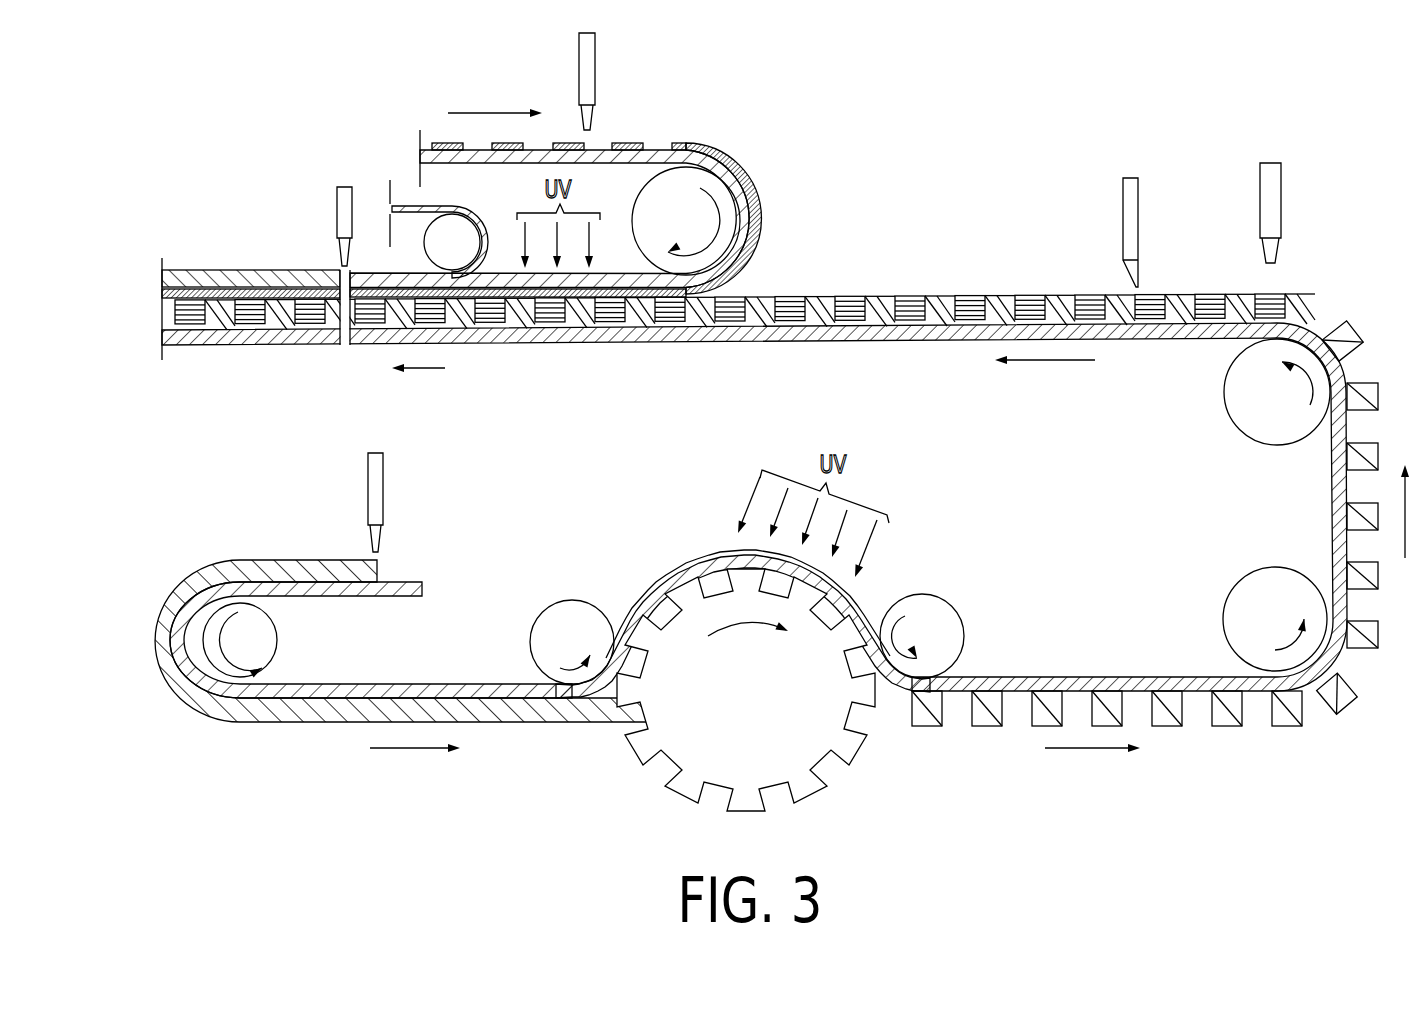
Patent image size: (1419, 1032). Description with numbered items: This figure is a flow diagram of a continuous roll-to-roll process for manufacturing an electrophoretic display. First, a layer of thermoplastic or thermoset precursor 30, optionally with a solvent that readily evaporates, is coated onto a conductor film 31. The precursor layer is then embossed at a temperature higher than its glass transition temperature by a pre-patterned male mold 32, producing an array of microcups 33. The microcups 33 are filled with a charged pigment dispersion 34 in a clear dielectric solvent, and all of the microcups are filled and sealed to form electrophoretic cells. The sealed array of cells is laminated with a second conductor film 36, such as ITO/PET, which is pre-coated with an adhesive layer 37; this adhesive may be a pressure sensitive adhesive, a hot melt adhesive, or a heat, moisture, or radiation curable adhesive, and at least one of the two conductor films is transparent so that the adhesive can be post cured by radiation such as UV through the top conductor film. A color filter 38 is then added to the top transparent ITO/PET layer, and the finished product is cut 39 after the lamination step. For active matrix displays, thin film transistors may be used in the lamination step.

The thermoplastic or thermoset precursor layer 30 is at (300, 722).
The conductor film 31 is at (372, 684).
The pre-patterned male mold 32 is at (655, 788).
The array of microcups 33 is at (1196, 727).
The charged pigment dispersion 34 is at (1283, 292).
The second conductor film 36 is at (757, 192).
The adhesive layer 37 is at (725, 152).
The color filter 38 is at (216, 270).
The cut 39 is at (335, 230).